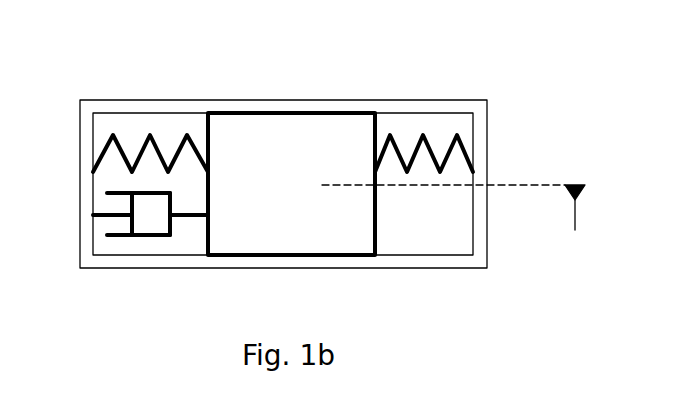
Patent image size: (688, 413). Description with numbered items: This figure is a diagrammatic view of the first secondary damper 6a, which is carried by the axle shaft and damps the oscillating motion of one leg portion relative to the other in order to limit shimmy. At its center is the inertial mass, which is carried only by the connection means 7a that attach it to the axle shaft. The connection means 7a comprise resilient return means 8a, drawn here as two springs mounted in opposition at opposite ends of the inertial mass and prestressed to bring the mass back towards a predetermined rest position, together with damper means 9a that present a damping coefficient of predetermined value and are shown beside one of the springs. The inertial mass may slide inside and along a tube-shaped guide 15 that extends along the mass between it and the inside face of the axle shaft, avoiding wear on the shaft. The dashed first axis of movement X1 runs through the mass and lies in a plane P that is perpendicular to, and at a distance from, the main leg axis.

The first secondary damper 6a is at (378, 100).
The connection means 7a is at (93, 85).
The resilient return means 8a is at (107, 145).
The damper means 9a is at (150, 235).
The guide 15 is at (277, 111).
The first axis of movement X1 is at (537, 185).
The plane P is at (575, 221).